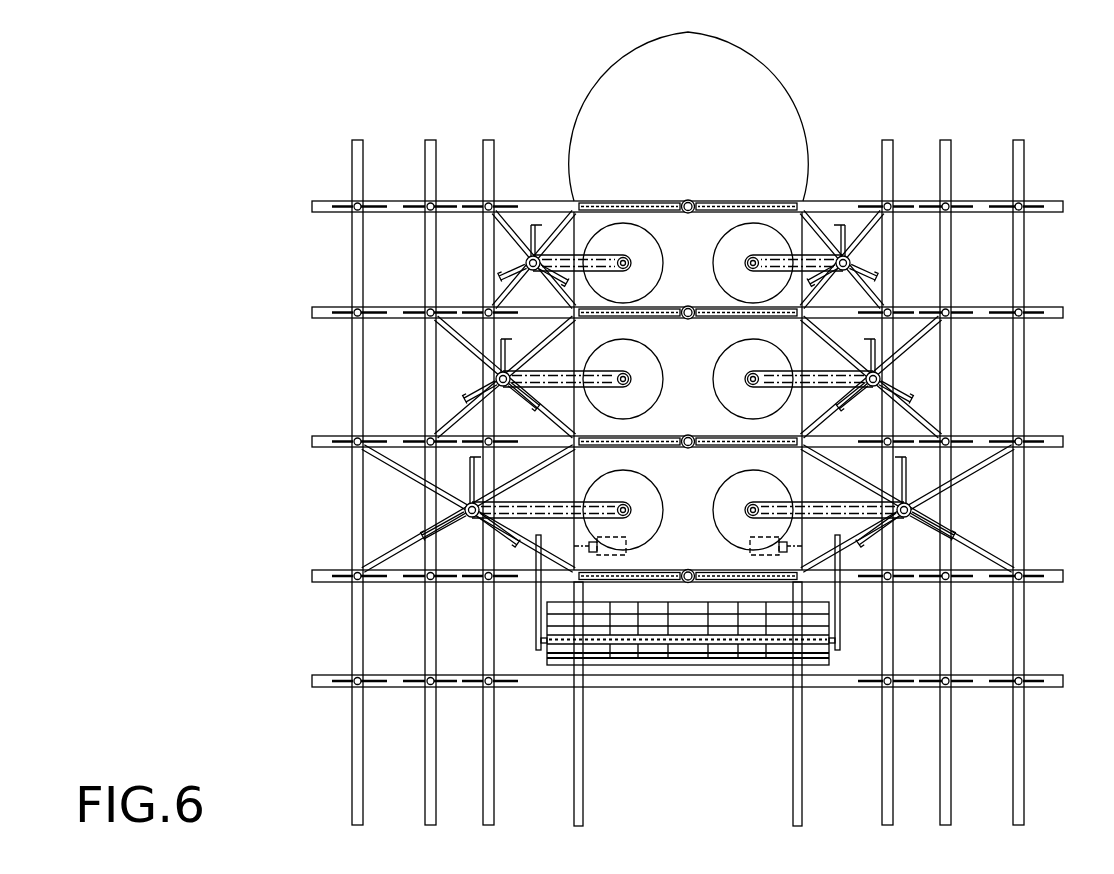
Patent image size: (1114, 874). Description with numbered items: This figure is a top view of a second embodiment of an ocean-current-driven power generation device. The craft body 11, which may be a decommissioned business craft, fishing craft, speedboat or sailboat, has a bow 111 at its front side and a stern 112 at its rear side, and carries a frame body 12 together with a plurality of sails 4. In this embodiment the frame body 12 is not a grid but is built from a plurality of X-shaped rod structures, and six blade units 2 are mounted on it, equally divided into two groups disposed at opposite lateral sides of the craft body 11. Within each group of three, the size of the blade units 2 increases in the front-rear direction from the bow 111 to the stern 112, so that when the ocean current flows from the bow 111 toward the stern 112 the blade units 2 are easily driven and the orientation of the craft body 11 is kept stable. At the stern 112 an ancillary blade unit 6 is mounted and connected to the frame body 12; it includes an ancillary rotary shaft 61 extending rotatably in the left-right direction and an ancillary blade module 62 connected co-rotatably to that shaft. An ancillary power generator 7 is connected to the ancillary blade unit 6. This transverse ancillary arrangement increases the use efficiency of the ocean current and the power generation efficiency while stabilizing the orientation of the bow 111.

The blade unit 2 is at (552, 212).
The sail 4 is at (338, 205).
The ancillary blade unit 6 is at (688, 687).
The ancillary power generator 7 is at (601, 555).
The craft body 11 is at (710, 106).
The frame body 12 is at (694, 460).
The ancillary rotary shaft 61 is at (667, 640).
The ancillary blade module 62 is at (707, 670).
The bow 111 is at (693, 60).
The stern 112 is at (785, 560).